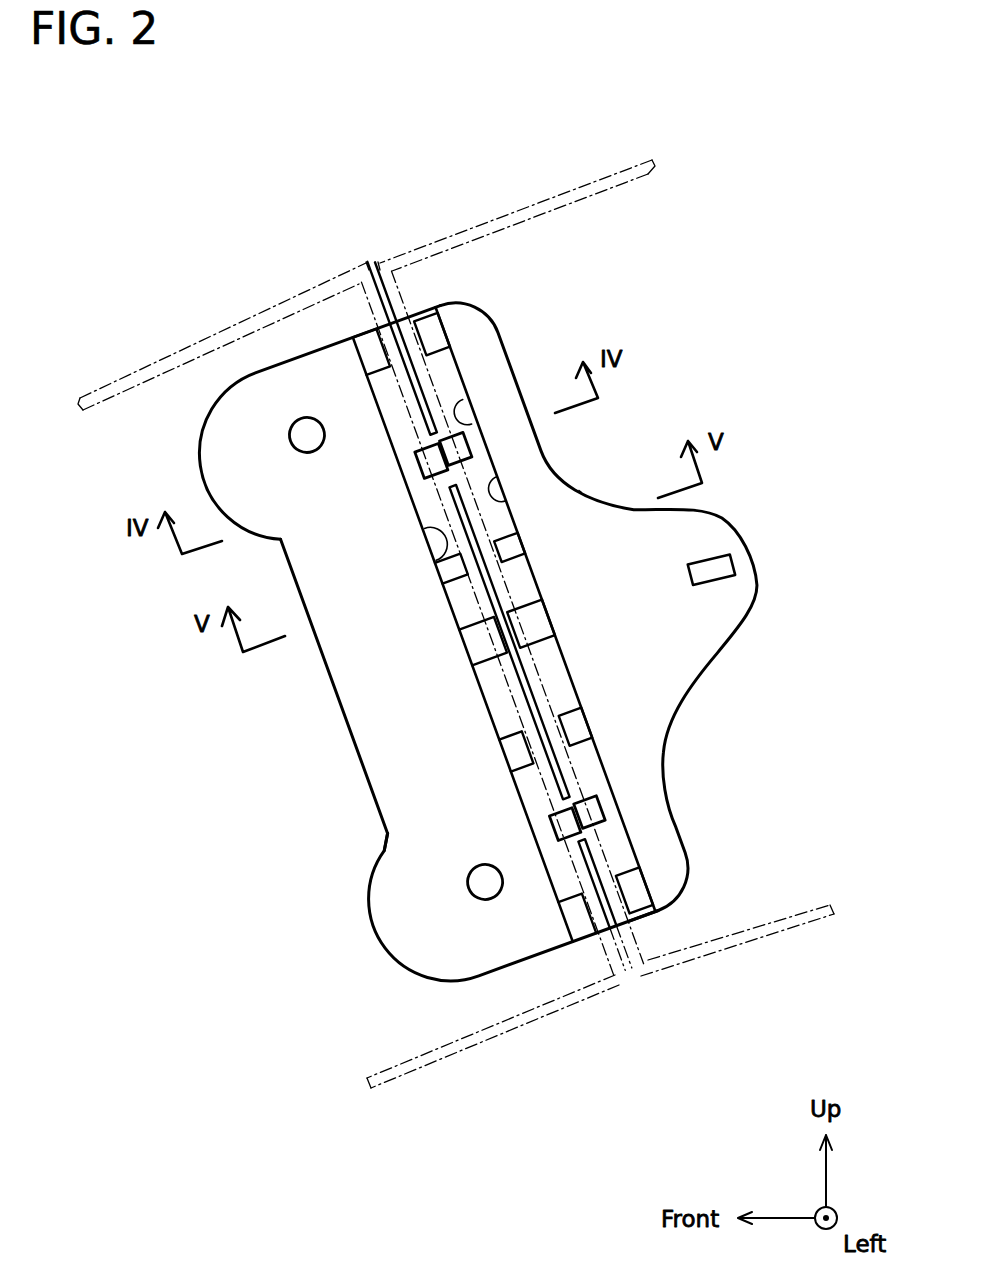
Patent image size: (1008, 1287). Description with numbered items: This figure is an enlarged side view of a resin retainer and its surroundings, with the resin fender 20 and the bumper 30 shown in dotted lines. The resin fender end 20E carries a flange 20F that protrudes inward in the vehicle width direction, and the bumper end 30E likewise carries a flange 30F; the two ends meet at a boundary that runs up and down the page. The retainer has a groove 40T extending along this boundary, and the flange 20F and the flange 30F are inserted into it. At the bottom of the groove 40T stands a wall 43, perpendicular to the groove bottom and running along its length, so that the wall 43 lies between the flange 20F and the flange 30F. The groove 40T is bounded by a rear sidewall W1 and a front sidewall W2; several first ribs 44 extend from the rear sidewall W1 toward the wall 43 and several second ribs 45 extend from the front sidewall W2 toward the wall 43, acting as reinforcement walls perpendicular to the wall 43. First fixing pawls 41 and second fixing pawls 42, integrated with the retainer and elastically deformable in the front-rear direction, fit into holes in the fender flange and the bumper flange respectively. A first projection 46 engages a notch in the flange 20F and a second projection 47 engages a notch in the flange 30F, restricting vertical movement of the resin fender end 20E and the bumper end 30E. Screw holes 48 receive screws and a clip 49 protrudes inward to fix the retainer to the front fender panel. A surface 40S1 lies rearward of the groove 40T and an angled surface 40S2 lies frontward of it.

The resin fender 20 is at (555, 193).
The resin fender end 20E is at (377, 262).
The flange 20F is at (400, 300).
The bumper 30 is at (162, 387).
The bumper end 30E is at (367, 262).
The flange 30F is at (367, 305).
The surface 40S1 is at (607, 636).
The surface 40S2 is at (423, 728).
The groove 40T is at (650, 918).
The first fixing pawls 41 is at (447, 425).
The second fixing pawls 42 is at (433, 462).
The wall 43 is at (407, 380).
The first ribs 44 is at (430, 335).
The second ribs 45 is at (378, 355).
The first projection 46 is at (558, 615).
The second projection 47 is at (430, 668).
The screw holes 48 is at (318, 448).
The clip 49 is at (712, 582).
The rear sidewall W1 is at (487, 487).
The front sidewall W2 is at (447, 528).